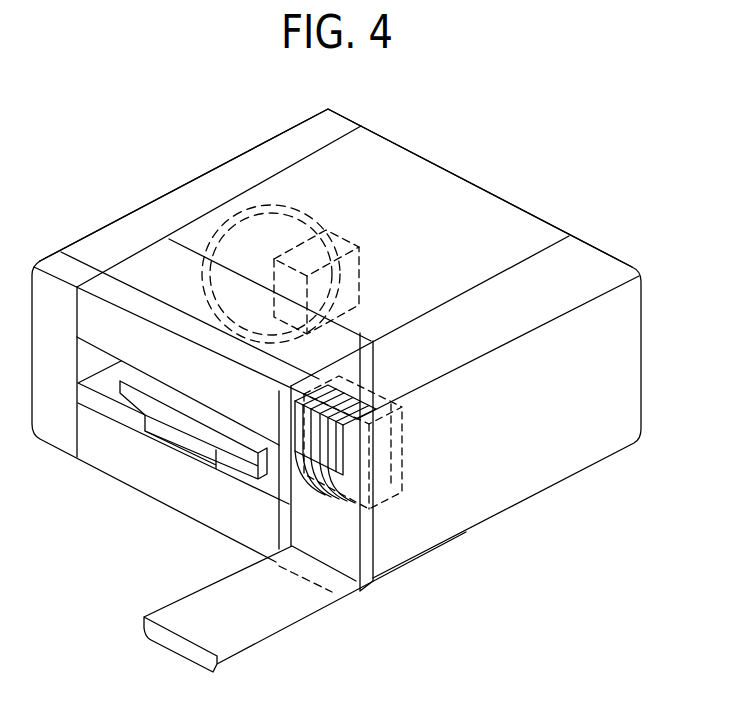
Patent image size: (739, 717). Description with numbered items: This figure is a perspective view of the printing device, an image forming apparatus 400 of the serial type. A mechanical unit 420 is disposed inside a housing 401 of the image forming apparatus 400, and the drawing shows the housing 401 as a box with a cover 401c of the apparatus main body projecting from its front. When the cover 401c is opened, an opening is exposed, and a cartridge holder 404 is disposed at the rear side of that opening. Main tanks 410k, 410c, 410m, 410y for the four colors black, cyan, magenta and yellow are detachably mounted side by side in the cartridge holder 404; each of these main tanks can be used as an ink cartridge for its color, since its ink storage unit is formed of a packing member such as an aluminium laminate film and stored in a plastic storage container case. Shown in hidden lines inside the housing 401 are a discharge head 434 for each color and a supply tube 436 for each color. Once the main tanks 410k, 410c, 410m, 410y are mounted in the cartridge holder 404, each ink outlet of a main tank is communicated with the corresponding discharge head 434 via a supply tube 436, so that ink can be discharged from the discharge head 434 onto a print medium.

The image forming apparatus 400 is at (563, 130).
The housing 401 is at (141, 202).
The cover 401c is at (284, 621).
The cartridge holder 404 is at (403, 451).
The main tank for black 410k is at (297, 478).
The main tank for cyan 410c is at (311, 481).
The main tank for magenta 410m is at (319, 487).
The main tank for yellow 410y is at (329, 494).
The mechanical unit 420 is at (417, 234).
The discharge head 434 is at (329, 230).
The supply tube 436 is at (237, 209).